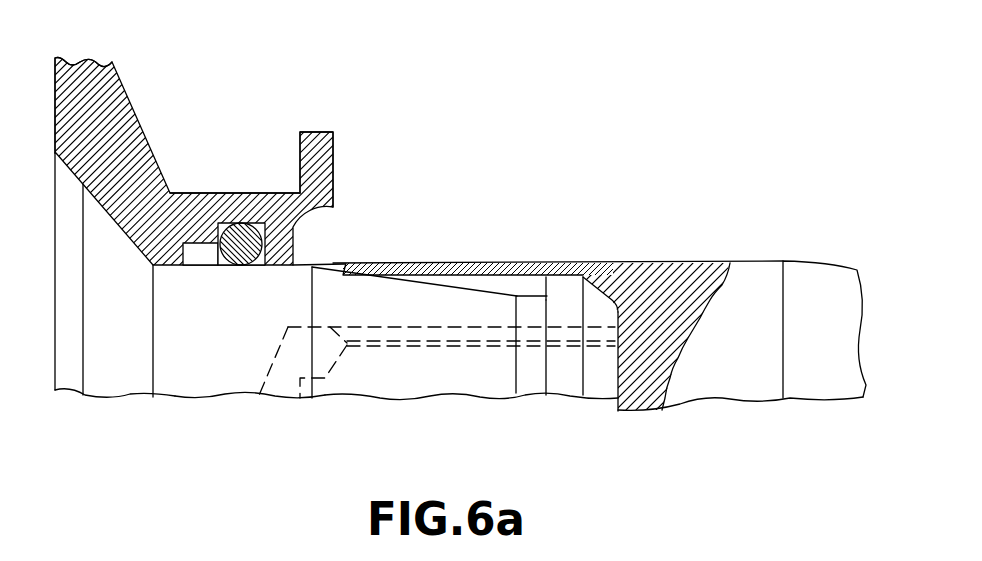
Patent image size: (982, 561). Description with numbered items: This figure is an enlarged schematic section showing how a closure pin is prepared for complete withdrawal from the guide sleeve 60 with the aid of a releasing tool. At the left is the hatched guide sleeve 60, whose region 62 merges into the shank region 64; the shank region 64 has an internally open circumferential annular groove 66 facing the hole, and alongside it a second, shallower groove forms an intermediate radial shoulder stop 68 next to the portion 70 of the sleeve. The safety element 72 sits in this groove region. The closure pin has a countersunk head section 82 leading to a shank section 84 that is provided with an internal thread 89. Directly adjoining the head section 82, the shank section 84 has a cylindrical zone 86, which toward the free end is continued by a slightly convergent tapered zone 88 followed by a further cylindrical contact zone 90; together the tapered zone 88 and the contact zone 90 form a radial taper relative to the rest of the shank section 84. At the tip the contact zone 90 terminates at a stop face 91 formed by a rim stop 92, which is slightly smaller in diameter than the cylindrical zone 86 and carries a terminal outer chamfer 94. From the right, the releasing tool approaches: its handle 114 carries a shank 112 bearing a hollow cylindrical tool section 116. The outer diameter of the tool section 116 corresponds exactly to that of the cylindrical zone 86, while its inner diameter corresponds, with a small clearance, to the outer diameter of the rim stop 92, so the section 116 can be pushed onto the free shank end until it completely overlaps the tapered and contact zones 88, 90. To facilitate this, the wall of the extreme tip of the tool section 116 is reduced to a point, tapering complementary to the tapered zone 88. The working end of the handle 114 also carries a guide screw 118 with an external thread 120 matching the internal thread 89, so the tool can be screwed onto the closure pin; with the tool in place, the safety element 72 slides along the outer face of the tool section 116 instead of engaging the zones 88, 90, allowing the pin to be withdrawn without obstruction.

The guide sleeve 60 is at (165, 84).
The flange 62 is at (83, 77).
The shank region 64 is at (202, 210).
The annular groove 66 is at (191, 257).
The intermediate radial shoulder stop 68 is at (208, 255).
The boss 70 is at (313, 130).
The safety element 72 is at (246, 252).
The head section 82 is at (110, 383).
The shank section 84 is at (310, 406).
The cylindrical zone 86 is at (218, 378).
The tapered zone 88 is at (333, 292).
The internal thread 89 is at (562, 288).
The contact zone 90 is at (533, 387).
The stop face 91 is at (542, 286).
The rim stop 92 is at (565, 393).
The terminal outer chamfer 94 is at (600, 385).
The shank 112 is at (675, 236).
The handle 114 is at (847, 349).
The hollow cylindrical tool section 116 is at (478, 262).
The guide screw 118 is at (365, 385).
The external thread 120 is at (393, 343).